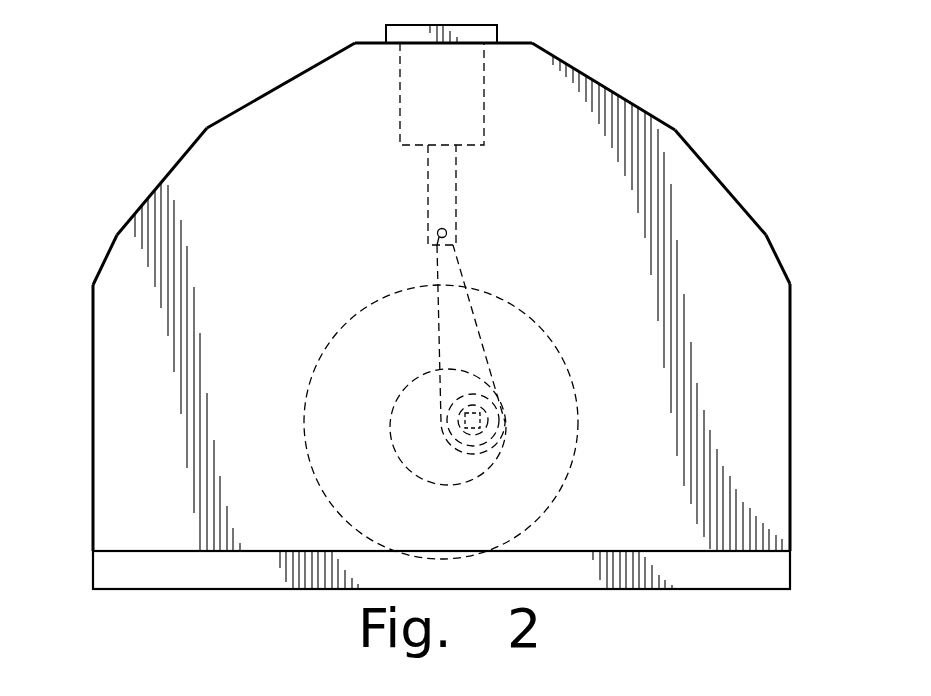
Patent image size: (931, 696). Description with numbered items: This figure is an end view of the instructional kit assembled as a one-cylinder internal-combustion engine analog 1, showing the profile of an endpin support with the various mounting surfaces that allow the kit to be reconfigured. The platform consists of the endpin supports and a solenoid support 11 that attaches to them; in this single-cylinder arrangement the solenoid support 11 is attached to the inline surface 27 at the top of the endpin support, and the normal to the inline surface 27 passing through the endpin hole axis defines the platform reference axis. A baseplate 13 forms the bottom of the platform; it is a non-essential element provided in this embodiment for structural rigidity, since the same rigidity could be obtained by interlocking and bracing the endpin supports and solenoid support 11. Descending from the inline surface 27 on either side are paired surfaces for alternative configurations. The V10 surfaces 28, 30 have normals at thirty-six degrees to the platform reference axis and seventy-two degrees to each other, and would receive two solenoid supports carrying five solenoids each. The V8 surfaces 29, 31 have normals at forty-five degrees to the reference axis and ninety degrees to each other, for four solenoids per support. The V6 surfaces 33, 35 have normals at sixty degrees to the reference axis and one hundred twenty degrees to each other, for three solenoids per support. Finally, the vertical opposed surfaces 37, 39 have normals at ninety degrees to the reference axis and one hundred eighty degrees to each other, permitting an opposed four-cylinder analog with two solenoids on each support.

The 1-cylinder engine analog 1 is at (71, 118).
The solenoid support 11 is at (388, 33).
The baseplate 13 is at (772, 575).
The inline surface 27 is at (514, 43).
The V10 surface 28 is at (630, 98).
The V8 surface 29 is at (708, 168).
The V10 surface 30 is at (293, 78).
The V8 surface 31 is at (192, 146).
The V6 surface 33 is at (764, 233).
The V6 surface 35 is at (118, 234).
The opposed surface 37 is at (791, 402).
The opposed surface 39 is at (93, 436).